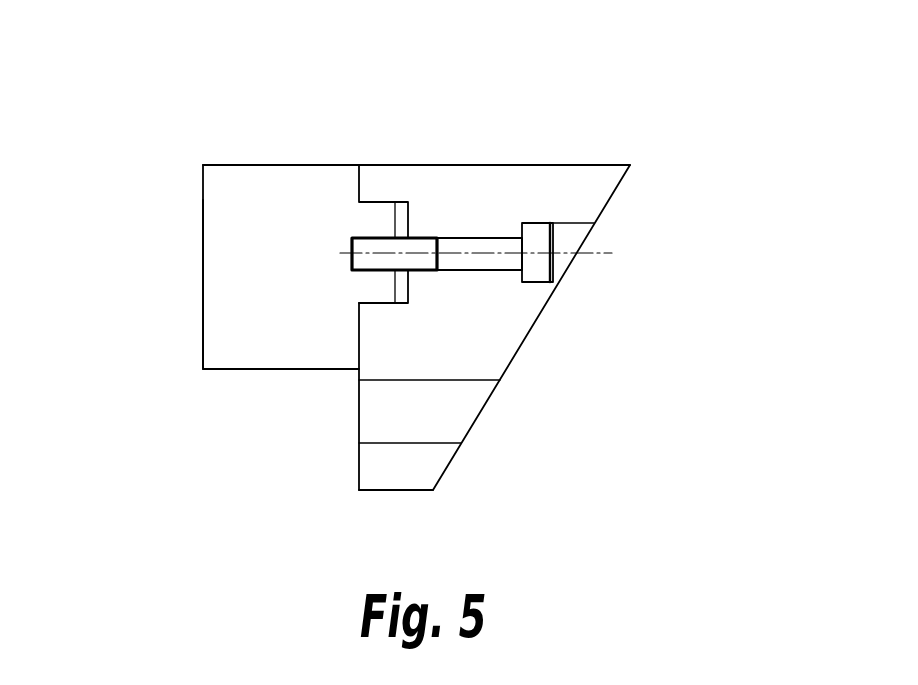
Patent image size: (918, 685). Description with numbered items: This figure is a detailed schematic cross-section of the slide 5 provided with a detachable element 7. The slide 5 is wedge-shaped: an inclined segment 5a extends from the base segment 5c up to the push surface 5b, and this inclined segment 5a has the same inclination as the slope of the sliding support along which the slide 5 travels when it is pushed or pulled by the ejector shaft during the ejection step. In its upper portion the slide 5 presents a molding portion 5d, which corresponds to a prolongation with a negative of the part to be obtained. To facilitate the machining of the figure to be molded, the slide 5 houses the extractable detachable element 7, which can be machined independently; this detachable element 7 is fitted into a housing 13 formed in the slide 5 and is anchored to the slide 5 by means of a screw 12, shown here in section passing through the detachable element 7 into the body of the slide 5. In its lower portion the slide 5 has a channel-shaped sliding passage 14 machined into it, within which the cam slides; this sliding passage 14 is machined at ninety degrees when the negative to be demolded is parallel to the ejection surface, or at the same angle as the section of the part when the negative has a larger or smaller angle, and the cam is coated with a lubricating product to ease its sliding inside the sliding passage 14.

The slide 5 is at (405, 288).
The inclined segment 5a is at (515, 353).
The push surface 5b is at (543, 163).
The base segment 5c is at (400, 483).
The molding portion 5d is at (222, 375).
The detachable element 7 is at (203, 255).
The screw 12 is at (455, 247).
The housing 13 is at (400, 213).
The sliding passage 14 is at (368, 413).